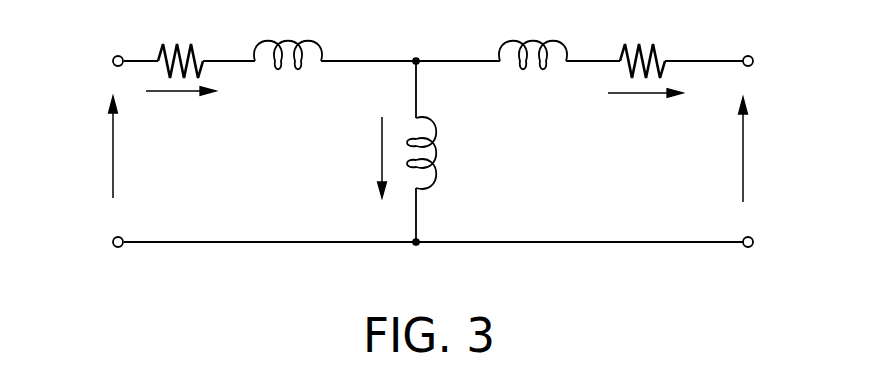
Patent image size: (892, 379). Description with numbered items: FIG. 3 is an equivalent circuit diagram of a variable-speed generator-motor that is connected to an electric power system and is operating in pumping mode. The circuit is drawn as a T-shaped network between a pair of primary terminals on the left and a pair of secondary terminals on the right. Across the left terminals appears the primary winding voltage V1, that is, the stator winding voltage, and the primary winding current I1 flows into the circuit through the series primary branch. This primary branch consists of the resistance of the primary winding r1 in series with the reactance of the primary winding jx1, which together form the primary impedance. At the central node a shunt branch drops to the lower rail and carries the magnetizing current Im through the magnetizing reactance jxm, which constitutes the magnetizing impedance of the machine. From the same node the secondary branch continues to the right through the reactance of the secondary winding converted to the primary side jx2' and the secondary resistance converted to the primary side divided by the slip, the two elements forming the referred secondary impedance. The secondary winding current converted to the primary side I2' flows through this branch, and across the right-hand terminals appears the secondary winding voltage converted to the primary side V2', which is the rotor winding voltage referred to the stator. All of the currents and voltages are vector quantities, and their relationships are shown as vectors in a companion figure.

The resistance of primary winding r1 is at (180, 39).
The reactance of primary winding jx1 is at (288, 34).
The magnetizing reactance jxm is at (445, 153).
The reactance of secondary winding converted to primary side jx2' is at (533, 34).
The primary winding current I1 is at (181, 108).
The secondary winding current converted to primary side I2' is at (645, 109).
The magnetizing current Im is at (360, 157).
The primary winding voltage V1 is at (97, 147).
The secondary winding voltage converted to primary side V2' is at (760, 149).